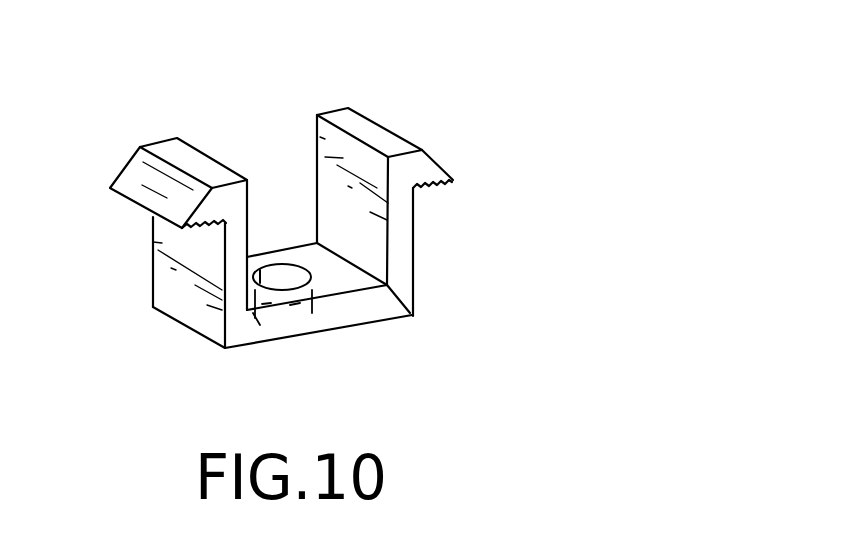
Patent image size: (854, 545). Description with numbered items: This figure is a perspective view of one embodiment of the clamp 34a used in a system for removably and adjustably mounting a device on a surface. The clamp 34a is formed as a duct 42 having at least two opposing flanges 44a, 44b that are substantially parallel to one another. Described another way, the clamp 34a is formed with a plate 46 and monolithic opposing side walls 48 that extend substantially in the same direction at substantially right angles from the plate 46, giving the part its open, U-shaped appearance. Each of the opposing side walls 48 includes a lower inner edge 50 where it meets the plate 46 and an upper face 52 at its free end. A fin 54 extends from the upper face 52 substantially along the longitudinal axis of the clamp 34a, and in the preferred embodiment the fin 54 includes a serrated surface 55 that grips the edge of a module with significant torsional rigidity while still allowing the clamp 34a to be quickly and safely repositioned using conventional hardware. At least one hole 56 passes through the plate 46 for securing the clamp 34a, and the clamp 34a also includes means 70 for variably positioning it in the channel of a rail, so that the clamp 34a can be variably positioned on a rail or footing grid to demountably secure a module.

The clamp 34a is at (607, 190).
The duct 42 is at (230, 143).
The opposing flange 44a is at (165, 293).
The opposing flange 44b is at (400, 253).
The plate 46 is at (345, 317).
The opposing side wall 48 is at (322, 315).
The lower inner edge 50 is at (410, 313).
The upper face 52 is at (362, 124).
The fin 54 is at (428, 172).
The serrated surface 55 is at (437, 190).
The hole 56 is at (280, 318).
The means for variably positioning 70 is at (282, 276).